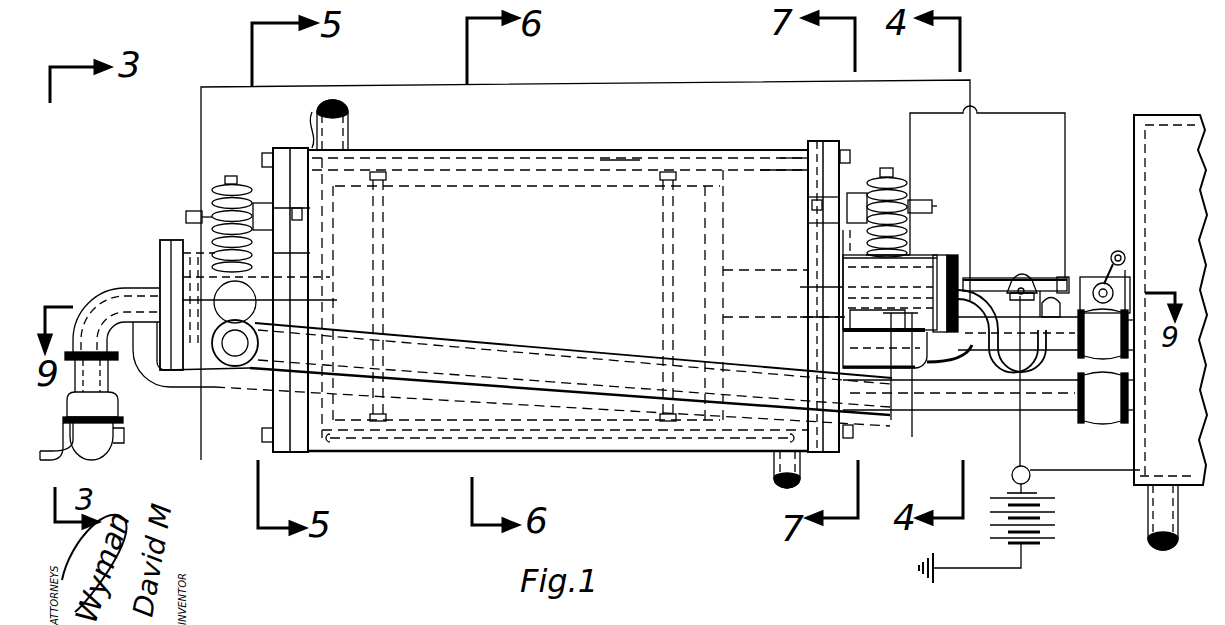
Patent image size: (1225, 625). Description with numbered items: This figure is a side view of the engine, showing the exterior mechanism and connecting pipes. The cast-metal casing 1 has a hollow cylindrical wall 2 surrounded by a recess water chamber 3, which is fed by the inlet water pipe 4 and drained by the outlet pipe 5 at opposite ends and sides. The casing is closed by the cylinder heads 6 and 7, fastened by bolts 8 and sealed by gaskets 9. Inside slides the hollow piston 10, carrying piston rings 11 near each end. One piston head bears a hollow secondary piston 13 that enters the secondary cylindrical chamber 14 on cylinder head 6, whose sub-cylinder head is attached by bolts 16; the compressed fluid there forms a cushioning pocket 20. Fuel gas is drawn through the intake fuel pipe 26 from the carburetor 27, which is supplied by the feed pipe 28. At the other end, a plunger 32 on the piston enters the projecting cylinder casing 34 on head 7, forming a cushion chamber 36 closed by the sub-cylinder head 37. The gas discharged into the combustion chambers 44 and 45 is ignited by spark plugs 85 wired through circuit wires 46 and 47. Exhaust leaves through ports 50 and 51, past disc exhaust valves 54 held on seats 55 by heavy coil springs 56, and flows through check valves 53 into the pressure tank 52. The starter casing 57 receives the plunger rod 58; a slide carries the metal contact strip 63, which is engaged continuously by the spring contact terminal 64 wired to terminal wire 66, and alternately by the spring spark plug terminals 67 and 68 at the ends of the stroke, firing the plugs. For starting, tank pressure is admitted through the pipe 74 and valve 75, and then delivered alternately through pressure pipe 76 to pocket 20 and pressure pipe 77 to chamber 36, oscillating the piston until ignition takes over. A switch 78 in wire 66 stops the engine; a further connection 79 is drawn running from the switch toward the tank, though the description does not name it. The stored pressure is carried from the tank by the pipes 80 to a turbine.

The casing 1 is at (578, 152).
The cylindrical wall 2 is at (770, 170).
The recess water chamber 3 is at (625, 160).
The inlet water pipe 4 is at (348, 110).
The outlet pipe 5 is at (800, 468).
The cylinder head 6 is at (273, 149).
The cylinder head 7 is at (840, 143).
The bolts 8 is at (850, 155).
The gasket 9 is at (290, 150).
The hollow piston 10 is at (485, 185).
The piston rings 11 is at (380, 175).
The secondary piston 13 is at (197, 352).
The secondary cylindrical chamber 14 is at (183, 240).
The bolts 16 is at (160, 253).
The pocket 20 is at (190, 362).
The intake fuel pipe 26 is at (118, 290).
The carburetor 27 is at (72, 405).
The feed pipe 28 is at (55, 452).
The cylindrical plunger 32 is at (745, 270).
The projecting cylinder casing 34 is at (905, 268).
The chamber 36 is at (948, 250).
The sub-cylinder head 37 is at (958, 254).
The combustion chamber 44 is at (788, 180).
The combustion chamber 45 is at (310, 121).
The circuit wire 46 is at (972, 82).
The circuit wire 47 is at (987, 186).
The exhaust port 50 is at (825, 288).
The exhaust port 51 is at (335, 301).
The pressure tank 52 is at (1134, 463).
The check valves 53 is at (1092, 343).
The disc exhaust valve 54 is at (233, 320).
The valve seat 55 is at (240, 334).
The heavy coil spring 56 is at (876, 180).
The starter casing 57 is at (1041, 278).
The plunger rod 58 is at (1051, 292).
The metal contact strip 63 is at (1012, 268).
The spring contact terminal 64 is at (1022, 280).
The terminal wire 66 is at (1022, 457).
The spring spark plug terminal 67 is at (1066, 277).
The spring spark plug terminal 68 is at (975, 278).
The pipe 74 is at (1130, 272).
The valve 75 is at (1106, 267).
The pressure pipe 76 is at (999, 366).
The pressure pipe 77 is at (1008, 376).
The switch 78 is at (1031, 480).
The wire 79 is at (1088, 472).
The pipes 80 is at (1148, 504).
The ignition spark plugs 85 is at (194, 210).